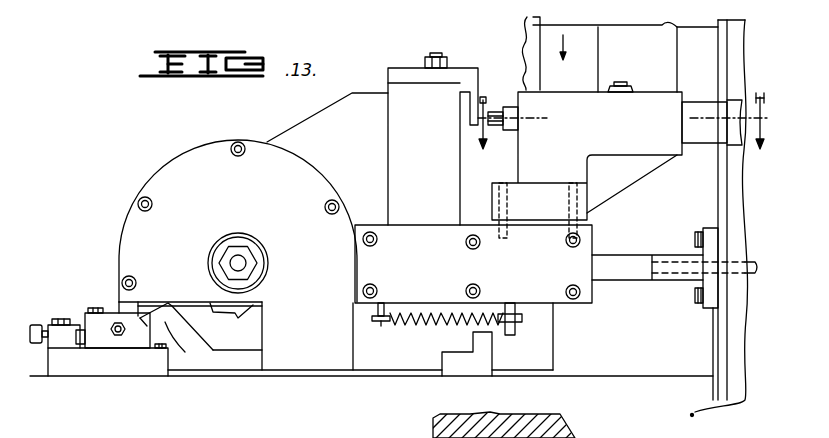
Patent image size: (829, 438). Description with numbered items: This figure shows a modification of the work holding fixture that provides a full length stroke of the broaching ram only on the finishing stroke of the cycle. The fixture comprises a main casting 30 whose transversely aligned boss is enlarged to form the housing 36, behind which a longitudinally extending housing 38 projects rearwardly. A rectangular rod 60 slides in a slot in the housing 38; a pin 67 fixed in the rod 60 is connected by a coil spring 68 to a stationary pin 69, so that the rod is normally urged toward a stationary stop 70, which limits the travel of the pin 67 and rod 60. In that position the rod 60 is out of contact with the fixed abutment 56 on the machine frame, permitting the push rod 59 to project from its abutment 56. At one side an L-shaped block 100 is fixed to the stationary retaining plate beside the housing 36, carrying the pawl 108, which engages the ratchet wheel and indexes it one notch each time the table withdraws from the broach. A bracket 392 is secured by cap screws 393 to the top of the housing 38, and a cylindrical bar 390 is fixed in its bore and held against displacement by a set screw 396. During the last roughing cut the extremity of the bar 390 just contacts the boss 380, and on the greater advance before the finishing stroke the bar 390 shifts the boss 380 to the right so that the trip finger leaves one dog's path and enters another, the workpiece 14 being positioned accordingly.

The workpiece 14 is at (524, 32).
The main casting 30 is at (314, 112).
The housing 36 is at (159, 164).
The longitudinally extending housing 38 is at (432, 225).
The fixed abutment 56 is at (684, 236).
The push rod 59 is at (756, 278).
The rod 60 is at (628, 274).
The pin 67 is at (515, 332).
The coil spring 68 is at (457, 325).
The stationary pin 69 is at (387, 327).
The stationary stop 70 is at (478, 363).
The L-shaped block 100 is at (60, 350).
The pawl 108 is at (184, 352).
The boss 380 is at (668, 192).
The cylindrical bar 390 is at (705, 135).
The bracket 392 is at (617, 181).
The cap screw 393 is at (508, 178).
The set screw 396 is at (622, 86).